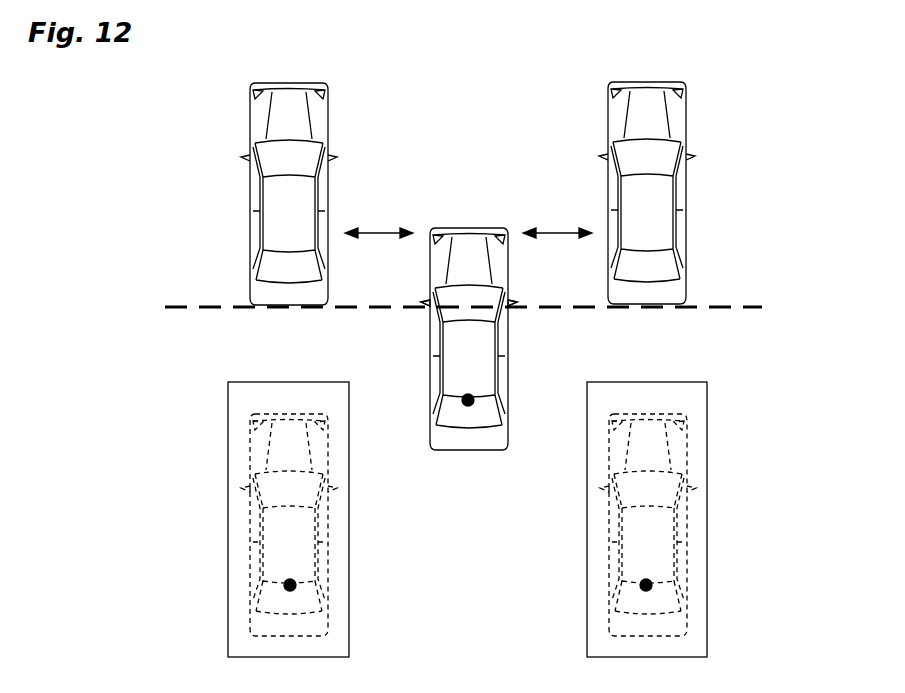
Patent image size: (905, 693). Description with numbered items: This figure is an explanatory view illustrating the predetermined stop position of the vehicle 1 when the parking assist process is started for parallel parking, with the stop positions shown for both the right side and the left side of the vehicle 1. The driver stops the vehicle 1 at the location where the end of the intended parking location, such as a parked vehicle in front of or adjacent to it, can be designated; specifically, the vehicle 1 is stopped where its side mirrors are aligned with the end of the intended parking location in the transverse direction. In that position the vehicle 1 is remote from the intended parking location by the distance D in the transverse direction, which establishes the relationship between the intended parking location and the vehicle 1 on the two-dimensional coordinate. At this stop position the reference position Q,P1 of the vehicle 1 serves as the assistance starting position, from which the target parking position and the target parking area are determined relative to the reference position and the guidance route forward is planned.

The vehicle 1 is at (507, 355).
The distance D is at (468, 223).
The reference position / assistance starting position Q,P1 is at (470, 404).